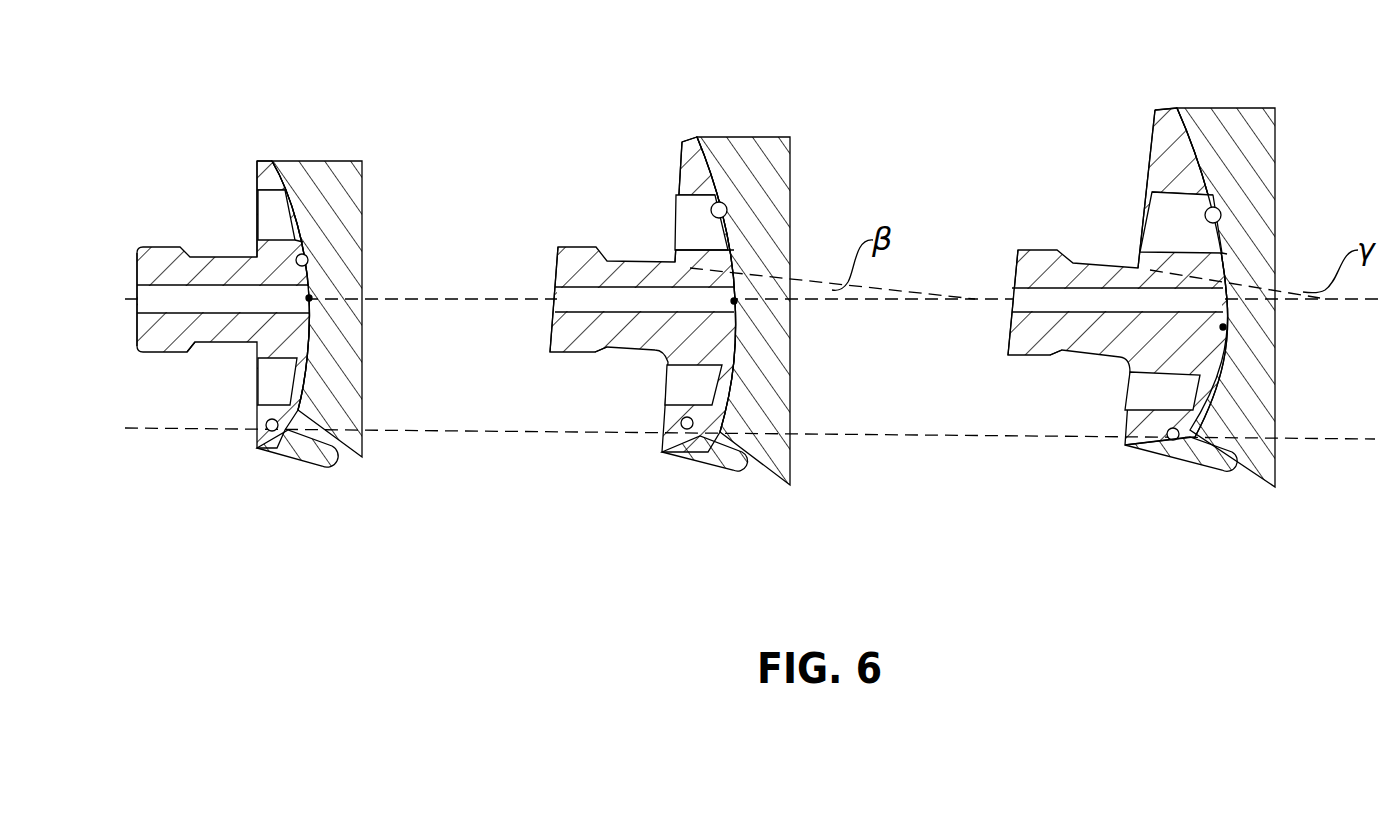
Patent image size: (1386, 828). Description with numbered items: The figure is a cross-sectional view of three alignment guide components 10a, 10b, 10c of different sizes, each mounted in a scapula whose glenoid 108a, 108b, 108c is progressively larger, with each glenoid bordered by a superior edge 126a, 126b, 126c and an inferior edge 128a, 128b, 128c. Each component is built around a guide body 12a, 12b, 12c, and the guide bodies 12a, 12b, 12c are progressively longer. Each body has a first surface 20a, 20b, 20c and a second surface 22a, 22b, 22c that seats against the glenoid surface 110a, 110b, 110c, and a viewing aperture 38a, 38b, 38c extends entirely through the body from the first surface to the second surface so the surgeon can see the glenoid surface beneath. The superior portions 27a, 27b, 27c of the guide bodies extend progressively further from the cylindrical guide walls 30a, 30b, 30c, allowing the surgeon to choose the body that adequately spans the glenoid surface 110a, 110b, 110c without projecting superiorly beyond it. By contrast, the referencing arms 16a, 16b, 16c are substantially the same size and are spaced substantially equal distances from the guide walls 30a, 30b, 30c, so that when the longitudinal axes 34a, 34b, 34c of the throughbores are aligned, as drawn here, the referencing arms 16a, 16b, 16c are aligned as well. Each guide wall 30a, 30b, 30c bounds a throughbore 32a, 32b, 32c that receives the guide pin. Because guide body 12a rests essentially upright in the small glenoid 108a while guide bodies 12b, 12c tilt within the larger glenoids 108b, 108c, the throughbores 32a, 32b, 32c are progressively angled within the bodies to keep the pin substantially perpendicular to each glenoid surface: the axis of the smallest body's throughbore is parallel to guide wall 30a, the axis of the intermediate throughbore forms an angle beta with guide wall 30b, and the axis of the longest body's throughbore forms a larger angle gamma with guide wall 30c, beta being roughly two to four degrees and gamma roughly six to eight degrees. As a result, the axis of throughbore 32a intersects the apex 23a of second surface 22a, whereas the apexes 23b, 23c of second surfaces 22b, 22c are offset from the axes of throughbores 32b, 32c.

The alignment guide component 10a is at (332, 112).
The alignment guide component 10b is at (777, 97).
The alignment guide component 10c is at (1248, 68).
The guide body 12a is at (267, 176).
The guide body 12b is at (690, 190).
The guide body 12c is at (1165, 182).
The referencing arm 16a is at (322, 462).
The referencing arm 16b is at (735, 470).
The referencing arm 16c is at (1222, 468).
The first surface 20a is at (250, 300).
The first surface 20b is at (674, 297).
The first surface 20c is at (1147, 284).
The second surface 22a is at (307, 330).
The second surface 22b is at (737, 345).
The second surface 22c is at (1245, 375).
The apex 23a is at (345, 316).
The apex 23b is at (778, 322).
The apex 23c is at (1262, 338).
The superior portion 27a is at (243, 138).
The superior portion 27b is at (670, 152).
The superior portion 27c is at (1140, 112).
The cylindrical guide wall 30a is at (190, 353).
The cylindrical guide wall 30b is at (607, 352).
The cylindrical guide wall 30c is at (1100, 357).
The throughbore 32a is at (132, 289).
The throughbore 32b is at (556, 290).
The throughbore 32c is at (1008, 292).
The rotational axis 34a, 34b, 34c is at (914, 302).
The viewing aperture 38a is at (262, 205).
The viewing aperture 38b is at (692, 222).
The viewing aperture 38c is at (1180, 236).
The glenoid 108a is at (339, 176).
The glenoid 108b is at (776, 183).
The glenoid 108c is at (1260, 145).
The glenoid surface 110a is at (308, 287).
The glenoid surface 110b is at (727, 210).
The glenoid surface 110c is at (1222, 222).
The superior edge 126a is at (268, 160).
The superior edge 126b is at (690, 140).
The superior edge 126c is at (1175, 108).
The inferior edge 128a is at (283, 420).
The inferior edge 128b is at (703, 440).
The inferior edge 128c is at (1185, 440).